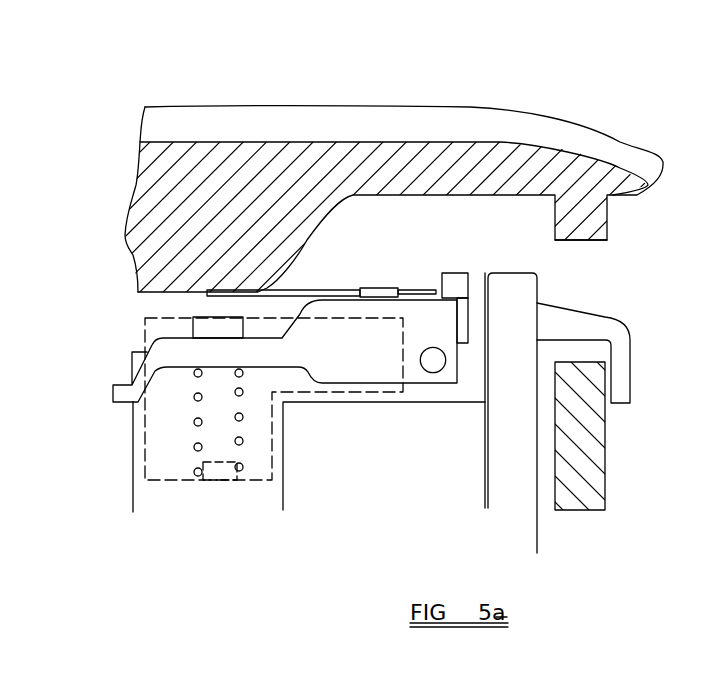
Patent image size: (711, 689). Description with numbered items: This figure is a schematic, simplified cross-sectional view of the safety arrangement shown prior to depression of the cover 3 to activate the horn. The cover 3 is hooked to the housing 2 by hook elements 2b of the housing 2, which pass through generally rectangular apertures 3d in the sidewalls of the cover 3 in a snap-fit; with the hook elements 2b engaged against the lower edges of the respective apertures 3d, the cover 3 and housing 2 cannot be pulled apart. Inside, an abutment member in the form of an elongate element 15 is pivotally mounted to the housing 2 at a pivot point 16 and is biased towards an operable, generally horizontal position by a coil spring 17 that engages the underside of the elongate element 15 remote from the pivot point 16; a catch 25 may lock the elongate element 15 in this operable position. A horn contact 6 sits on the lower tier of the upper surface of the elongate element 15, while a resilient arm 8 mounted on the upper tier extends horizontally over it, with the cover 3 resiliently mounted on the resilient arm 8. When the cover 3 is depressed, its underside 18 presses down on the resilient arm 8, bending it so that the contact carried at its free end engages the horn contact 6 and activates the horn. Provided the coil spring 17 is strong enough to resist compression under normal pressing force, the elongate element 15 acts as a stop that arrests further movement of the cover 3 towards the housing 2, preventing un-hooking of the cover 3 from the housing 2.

The cover 3 is at (565, 122).
The aperture 3d is at (580, 272).
The underside of the cover 18 is at (190, 228).
The resilient arm 8 is at (343, 289).
The stop block 25 is at (453, 282).
The elongate element 15 is at (357, 368).
The horn contact 6 is at (192, 321).
The pivot point 16 is at (432, 370).
The coil spring 17 is at (197, 422).
The housing 2 is at (540, 524).
The hook element 2b is at (631, 345).